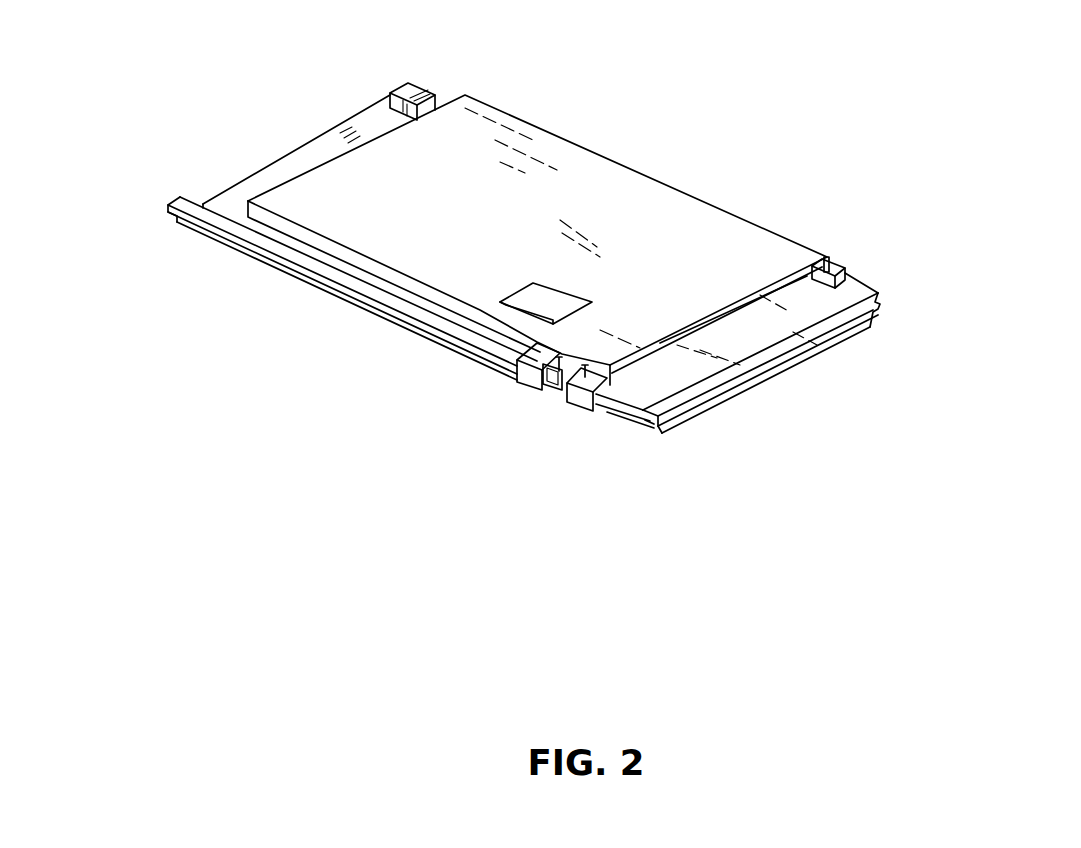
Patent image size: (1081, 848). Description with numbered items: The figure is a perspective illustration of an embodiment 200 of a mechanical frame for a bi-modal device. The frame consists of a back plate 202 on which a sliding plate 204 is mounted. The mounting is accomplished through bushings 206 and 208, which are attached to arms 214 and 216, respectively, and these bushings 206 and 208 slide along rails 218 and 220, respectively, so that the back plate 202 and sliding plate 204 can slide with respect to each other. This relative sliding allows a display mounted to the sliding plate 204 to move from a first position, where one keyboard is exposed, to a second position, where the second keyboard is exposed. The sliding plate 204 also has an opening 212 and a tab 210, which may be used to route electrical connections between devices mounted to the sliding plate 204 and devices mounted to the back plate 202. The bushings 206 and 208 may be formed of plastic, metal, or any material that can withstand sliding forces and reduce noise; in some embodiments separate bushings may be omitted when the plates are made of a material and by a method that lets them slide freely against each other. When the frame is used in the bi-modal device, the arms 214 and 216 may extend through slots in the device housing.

The mechanical frame for a bi-modal device 200 is at (331, 521).
The back plate 202 is at (806, 359).
The sliding plate 204 is at (588, 150).
The bushing 206 is at (850, 276).
The bushing 208 is at (592, 406).
The tab 210 is at (562, 366).
The opening 212 is at (553, 289).
The arm 214 is at (528, 376).
The arm 216 is at (838, 262).
The rail 218 is at (253, 236).
The rail 220 is at (886, 297).